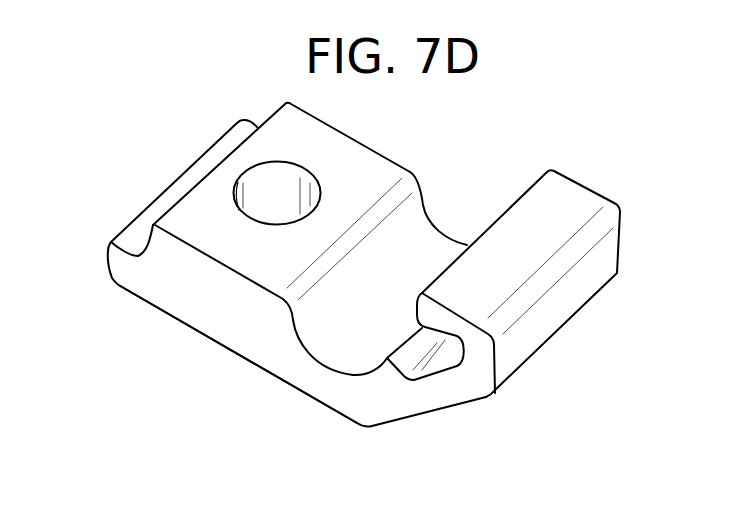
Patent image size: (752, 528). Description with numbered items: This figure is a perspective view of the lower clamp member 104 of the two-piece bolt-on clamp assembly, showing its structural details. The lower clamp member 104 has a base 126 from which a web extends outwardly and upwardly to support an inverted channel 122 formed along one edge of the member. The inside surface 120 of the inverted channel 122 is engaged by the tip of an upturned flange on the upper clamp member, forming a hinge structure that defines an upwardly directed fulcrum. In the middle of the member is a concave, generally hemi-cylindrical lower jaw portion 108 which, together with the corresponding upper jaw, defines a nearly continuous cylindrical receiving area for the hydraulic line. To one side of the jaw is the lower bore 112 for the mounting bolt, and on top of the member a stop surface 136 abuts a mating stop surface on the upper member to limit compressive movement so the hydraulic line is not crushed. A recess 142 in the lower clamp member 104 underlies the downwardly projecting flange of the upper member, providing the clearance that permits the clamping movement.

The lower clamp member 104 is at (243, 354).
The lower jaw portion 108 is at (418, 230).
The lower bore 112 is at (268, 180).
The inside surface 120 is at (438, 331).
The inverted channel 122 is at (562, 198).
The base 126 is at (187, 307).
The stop surface 136 is at (330, 143).
The recess 142 is at (137, 237).